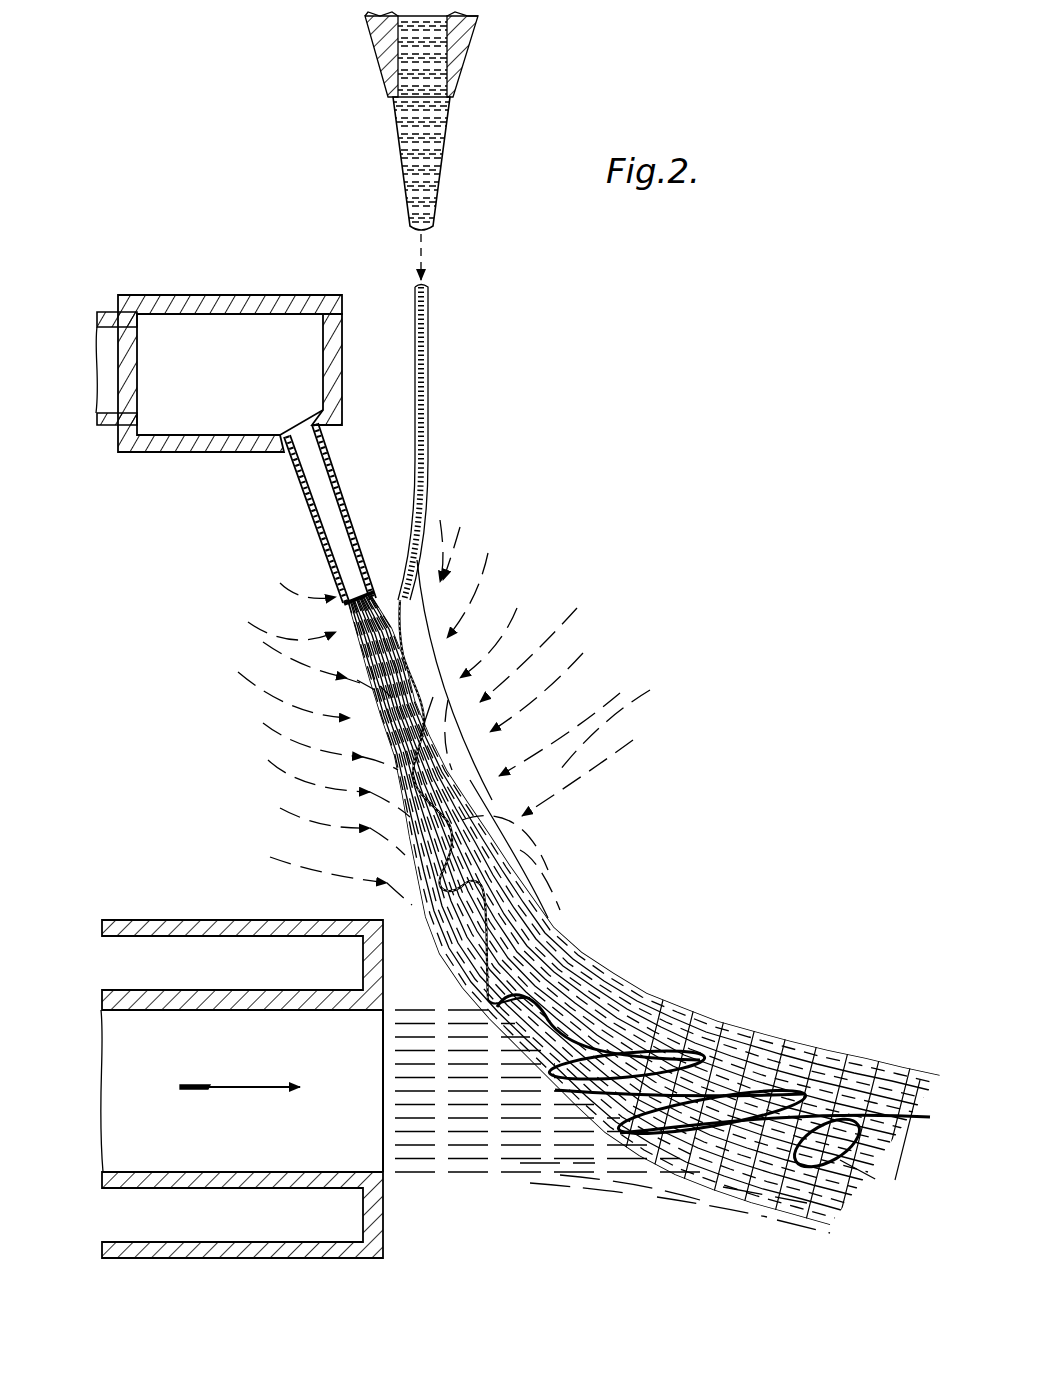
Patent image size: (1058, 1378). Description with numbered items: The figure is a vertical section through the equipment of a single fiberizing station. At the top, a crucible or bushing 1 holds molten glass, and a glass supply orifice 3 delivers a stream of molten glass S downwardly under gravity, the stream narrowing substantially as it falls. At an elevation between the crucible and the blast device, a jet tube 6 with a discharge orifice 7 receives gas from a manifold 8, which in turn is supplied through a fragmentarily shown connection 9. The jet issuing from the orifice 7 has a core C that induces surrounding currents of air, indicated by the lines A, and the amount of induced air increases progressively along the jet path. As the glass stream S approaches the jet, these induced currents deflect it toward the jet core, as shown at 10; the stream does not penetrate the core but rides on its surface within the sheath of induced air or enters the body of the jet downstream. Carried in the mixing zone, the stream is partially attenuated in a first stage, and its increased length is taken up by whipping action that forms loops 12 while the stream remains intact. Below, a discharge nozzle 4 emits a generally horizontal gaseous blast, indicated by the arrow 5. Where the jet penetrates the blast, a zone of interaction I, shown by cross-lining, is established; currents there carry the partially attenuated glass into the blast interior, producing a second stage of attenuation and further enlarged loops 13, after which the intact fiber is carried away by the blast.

The crucible or bushing 1 is at (470, 35).
The glass supply orifice 3 is at (435, 78).
The stream of molten glass S is at (425, 300).
The manifold 8 is at (252, 295).
The connection 9 is at (105, 428).
The jet tube 6 is at (302, 492).
The discharge orifice 7 is at (350, 590).
The deflection of glass stream toward jet core 10 is at (593, 655).
The induced air currents A is at (318, 815).
The jet core C is at (385, 692).
The loops of embryonic fiber 12 is at (483, 880).
The zone of interaction I is at (780, 1047).
The blast 5 is at (240, 1070).
The discharge nozzle 4 is at (278, 1258).
The enlarged loops 13 is at (705, 1115).